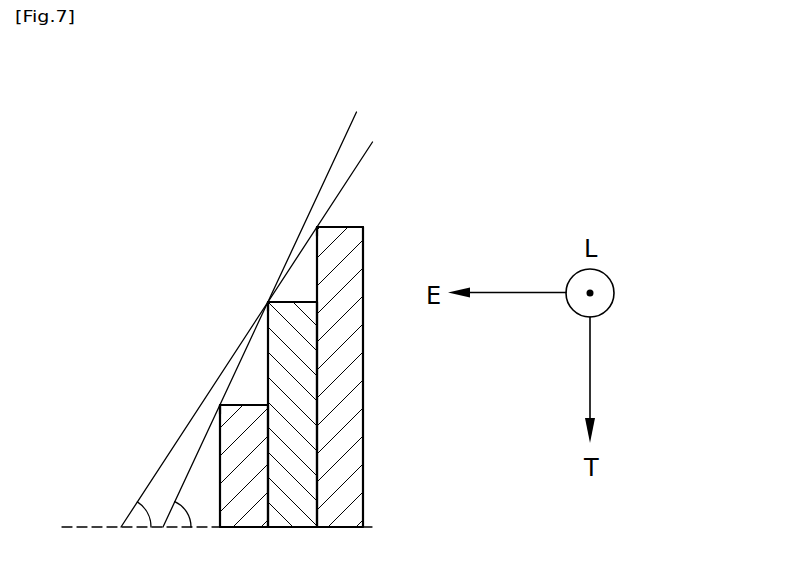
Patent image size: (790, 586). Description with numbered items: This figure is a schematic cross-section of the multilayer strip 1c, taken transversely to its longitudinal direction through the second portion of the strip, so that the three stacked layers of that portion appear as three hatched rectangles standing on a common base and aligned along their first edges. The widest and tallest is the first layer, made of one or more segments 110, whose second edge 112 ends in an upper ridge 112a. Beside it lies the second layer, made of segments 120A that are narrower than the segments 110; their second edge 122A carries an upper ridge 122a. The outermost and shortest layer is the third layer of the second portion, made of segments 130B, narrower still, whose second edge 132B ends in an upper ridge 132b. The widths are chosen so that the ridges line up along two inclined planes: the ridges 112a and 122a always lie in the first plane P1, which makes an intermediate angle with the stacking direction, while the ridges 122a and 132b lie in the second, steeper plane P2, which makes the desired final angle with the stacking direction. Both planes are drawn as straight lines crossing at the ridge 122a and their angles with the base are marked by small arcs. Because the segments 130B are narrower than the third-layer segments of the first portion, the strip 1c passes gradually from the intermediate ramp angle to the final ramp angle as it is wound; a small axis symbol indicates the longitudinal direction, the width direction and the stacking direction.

The segments of the first layer 110 is at (343, 507).
The second edges of the first-layer segments 112 is at (342, 226).
The upper ridge of the first-layer second edge 112a is at (316, 227).
The segments of the second layer 120A is at (290, 514).
The second edges of the second-layer segments 122A is at (294, 300).
The upper ridge of the second-layer second edge 122a is at (268, 302).
The segments of the third layer of the second portion 130B is at (243, 512).
The second edges of the third-layer segments 132B is at (247, 403).
The upper ridge of the third-layer second edge 132b is at (220, 405).
The multilayer strip 1c is at (412, 496).
The first plane P1 is at (355, 168).
The second plane P2 is at (350, 123).